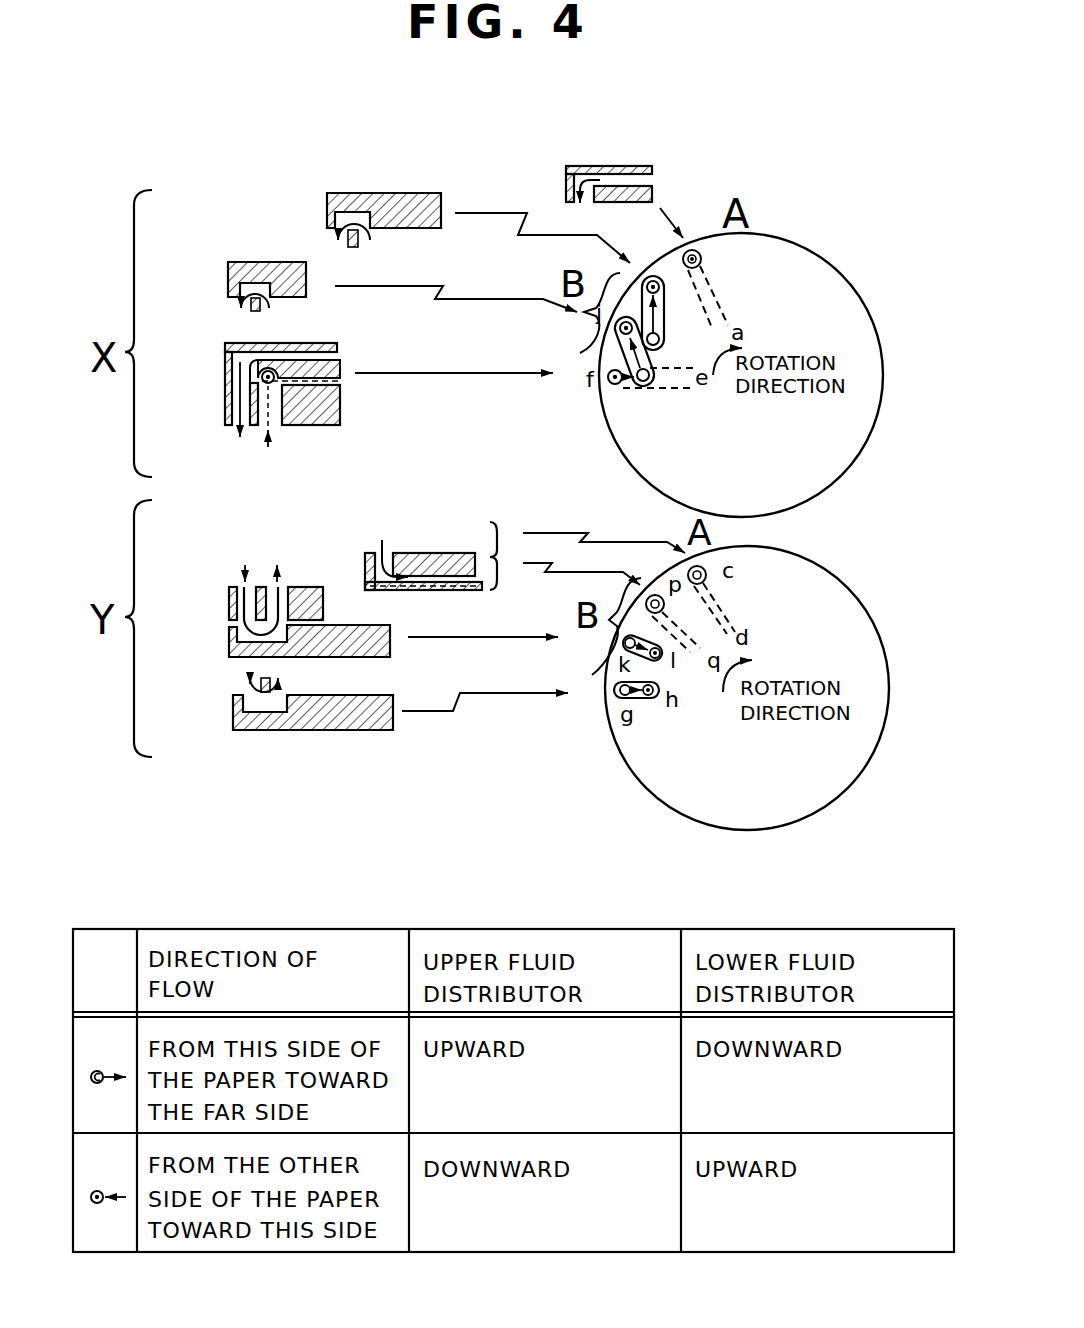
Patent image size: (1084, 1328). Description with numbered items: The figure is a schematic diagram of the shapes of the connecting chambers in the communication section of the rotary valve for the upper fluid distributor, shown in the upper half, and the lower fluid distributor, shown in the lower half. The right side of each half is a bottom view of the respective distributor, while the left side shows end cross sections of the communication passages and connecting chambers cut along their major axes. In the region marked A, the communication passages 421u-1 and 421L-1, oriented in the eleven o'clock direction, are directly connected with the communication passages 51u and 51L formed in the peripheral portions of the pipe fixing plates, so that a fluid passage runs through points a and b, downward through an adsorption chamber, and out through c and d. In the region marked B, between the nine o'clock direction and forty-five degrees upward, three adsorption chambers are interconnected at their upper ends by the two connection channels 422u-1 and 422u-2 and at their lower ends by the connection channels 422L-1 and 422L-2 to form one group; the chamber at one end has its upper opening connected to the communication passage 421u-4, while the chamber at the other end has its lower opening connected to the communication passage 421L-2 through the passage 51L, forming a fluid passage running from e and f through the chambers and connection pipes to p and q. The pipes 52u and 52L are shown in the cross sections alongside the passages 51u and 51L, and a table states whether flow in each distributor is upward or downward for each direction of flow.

The communication passage 421u-1 is at (637, 180).
The communication passage 421u-4 is at (317, 352).
The connection channel 422u-1 is at (247, 262).
The connection channel 422u-2 is at (366, 214).
The communication passage 51u is at (232, 428).
The upper discharge pipe 52u is at (284, 428).
The communication passage 51L is at (242, 583).
The lower discharge pipe 52L is at (284, 583).
The communication passage 421L-1 is at (614, 632).
The communication passage 421L-2 is at (712, 645).
The connection channel 422L-1 is at (252, 712).
The connection channel 422L-2 is at (235, 662).